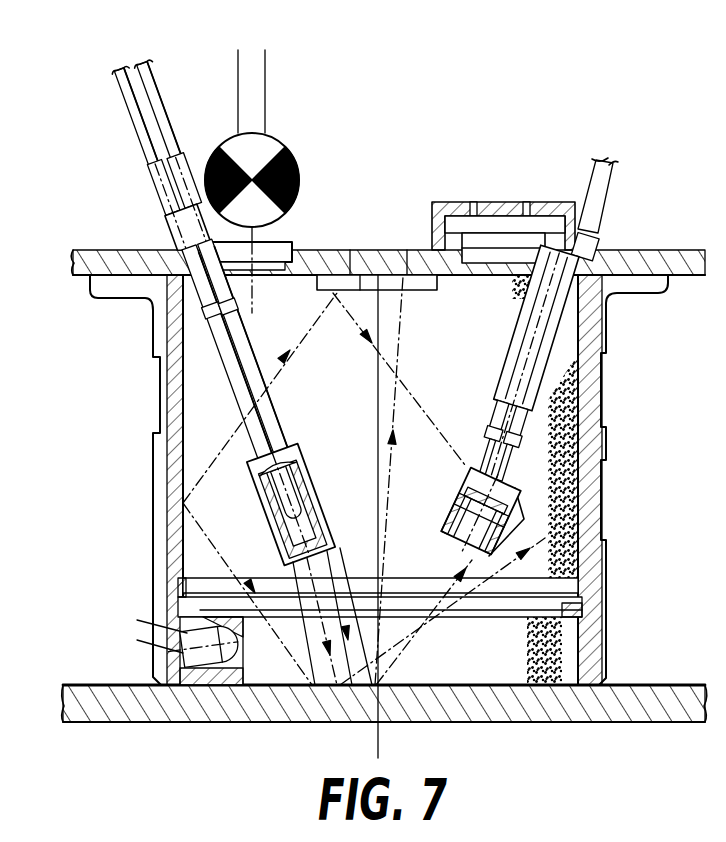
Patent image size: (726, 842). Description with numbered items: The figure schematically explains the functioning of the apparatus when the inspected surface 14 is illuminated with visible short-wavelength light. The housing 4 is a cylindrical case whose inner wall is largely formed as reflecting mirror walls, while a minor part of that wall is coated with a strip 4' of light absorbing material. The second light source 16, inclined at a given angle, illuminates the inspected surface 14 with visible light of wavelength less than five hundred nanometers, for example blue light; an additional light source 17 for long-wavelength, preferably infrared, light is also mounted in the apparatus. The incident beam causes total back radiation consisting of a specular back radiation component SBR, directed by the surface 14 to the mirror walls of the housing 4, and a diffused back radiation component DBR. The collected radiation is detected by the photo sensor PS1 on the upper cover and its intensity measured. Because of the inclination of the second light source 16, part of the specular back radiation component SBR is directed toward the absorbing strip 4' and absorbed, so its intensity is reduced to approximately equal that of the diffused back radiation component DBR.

The housing 4 is at (136, 480).
The strip of light absorbing material 4' is at (615, 480).
The inspected surface 14 is at (657, 685).
The second light source 16 is at (320, 508).
The additional light source 17 is at (507, 497).
The photo sensor PS1 is at (368, 262).
The diffused back radiation component DBR is at (388, 482).
The specular back radiation component SBR is at (228, 521).